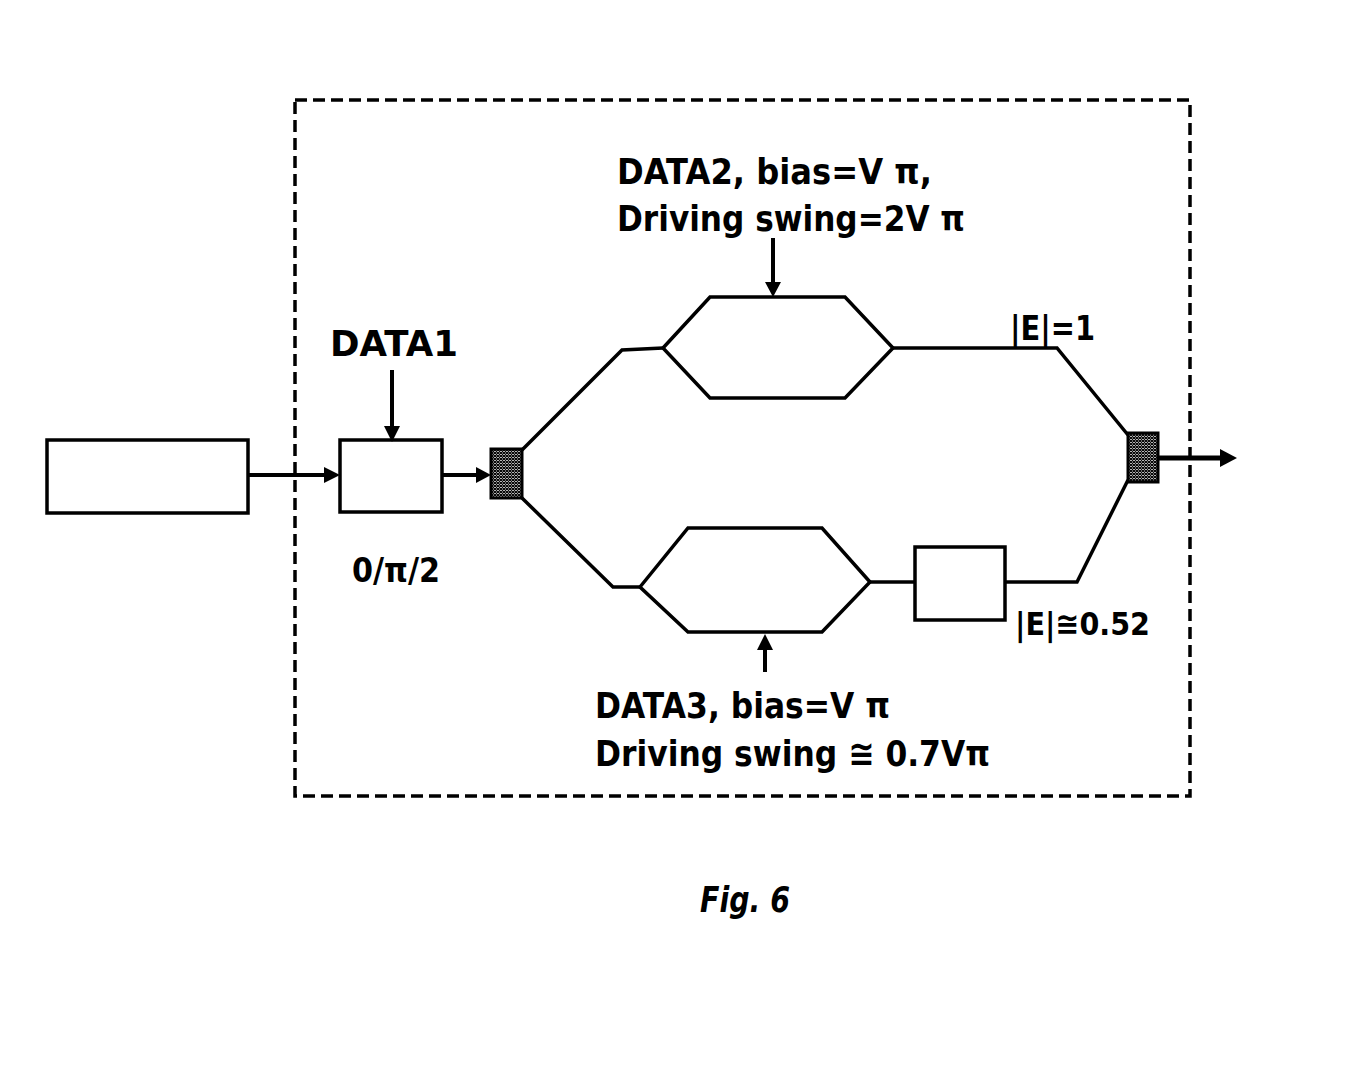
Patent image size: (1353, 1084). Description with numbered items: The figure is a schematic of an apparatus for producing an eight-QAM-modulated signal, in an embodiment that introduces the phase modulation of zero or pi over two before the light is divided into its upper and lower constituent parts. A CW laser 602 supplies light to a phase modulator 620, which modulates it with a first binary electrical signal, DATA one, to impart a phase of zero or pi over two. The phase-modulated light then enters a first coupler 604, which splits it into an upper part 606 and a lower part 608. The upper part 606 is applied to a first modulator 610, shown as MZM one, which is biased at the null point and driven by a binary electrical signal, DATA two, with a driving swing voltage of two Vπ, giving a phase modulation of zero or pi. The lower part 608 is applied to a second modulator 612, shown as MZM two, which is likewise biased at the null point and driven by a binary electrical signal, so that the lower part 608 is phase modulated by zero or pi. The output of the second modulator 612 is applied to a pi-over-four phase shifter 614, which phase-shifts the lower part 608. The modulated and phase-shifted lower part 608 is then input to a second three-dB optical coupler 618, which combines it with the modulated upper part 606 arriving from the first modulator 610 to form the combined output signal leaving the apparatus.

The CW laser 602 is at (120, 446).
The first coupler 604 is at (500, 446).
The upper part 606 is at (577, 386).
The lower part 608 is at (570, 553).
The first modulator 610 is at (860, 309).
The second modulator 612 is at (826, 538).
The π/4 phase shifter 614 is at (950, 547).
The second 3 dB optical coupler 618 is at (1138, 432).
The phase modulator 620 is at (347, 514).